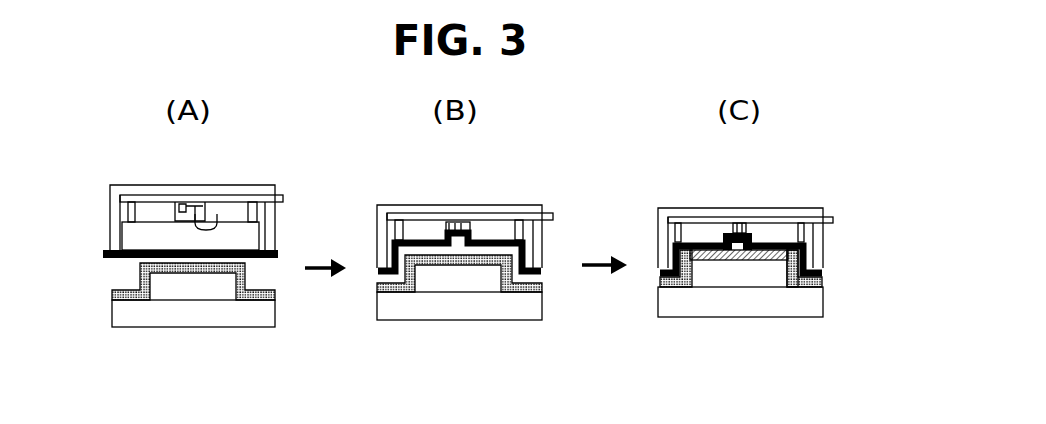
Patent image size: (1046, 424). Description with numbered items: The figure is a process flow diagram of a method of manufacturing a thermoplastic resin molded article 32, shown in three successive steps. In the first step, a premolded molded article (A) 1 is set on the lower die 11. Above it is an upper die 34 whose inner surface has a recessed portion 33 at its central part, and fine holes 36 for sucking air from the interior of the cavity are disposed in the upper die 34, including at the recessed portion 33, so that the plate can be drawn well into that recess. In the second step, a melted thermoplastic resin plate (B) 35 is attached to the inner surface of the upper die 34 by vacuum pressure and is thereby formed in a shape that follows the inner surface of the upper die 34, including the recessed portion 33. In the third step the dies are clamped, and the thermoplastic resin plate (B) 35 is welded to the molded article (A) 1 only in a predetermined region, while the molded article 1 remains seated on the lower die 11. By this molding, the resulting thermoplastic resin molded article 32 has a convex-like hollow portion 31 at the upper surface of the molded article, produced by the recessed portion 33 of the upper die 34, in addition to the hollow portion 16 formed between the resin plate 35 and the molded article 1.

The molded article (A) 1 is at (140, 273).
The lower die 11 is at (192, 317).
The hollow portion 16 is at (798, 263).
The hollow portion 31 is at (752, 242).
The thermoplastic resin molded article 32 is at (697, 243).
The recessed portion 33 is at (210, 229).
The upper die 34 is at (247, 190).
The thermoplastic resin plate (B) 35 is at (155, 250).
The fine holes 36 is at (178, 210).